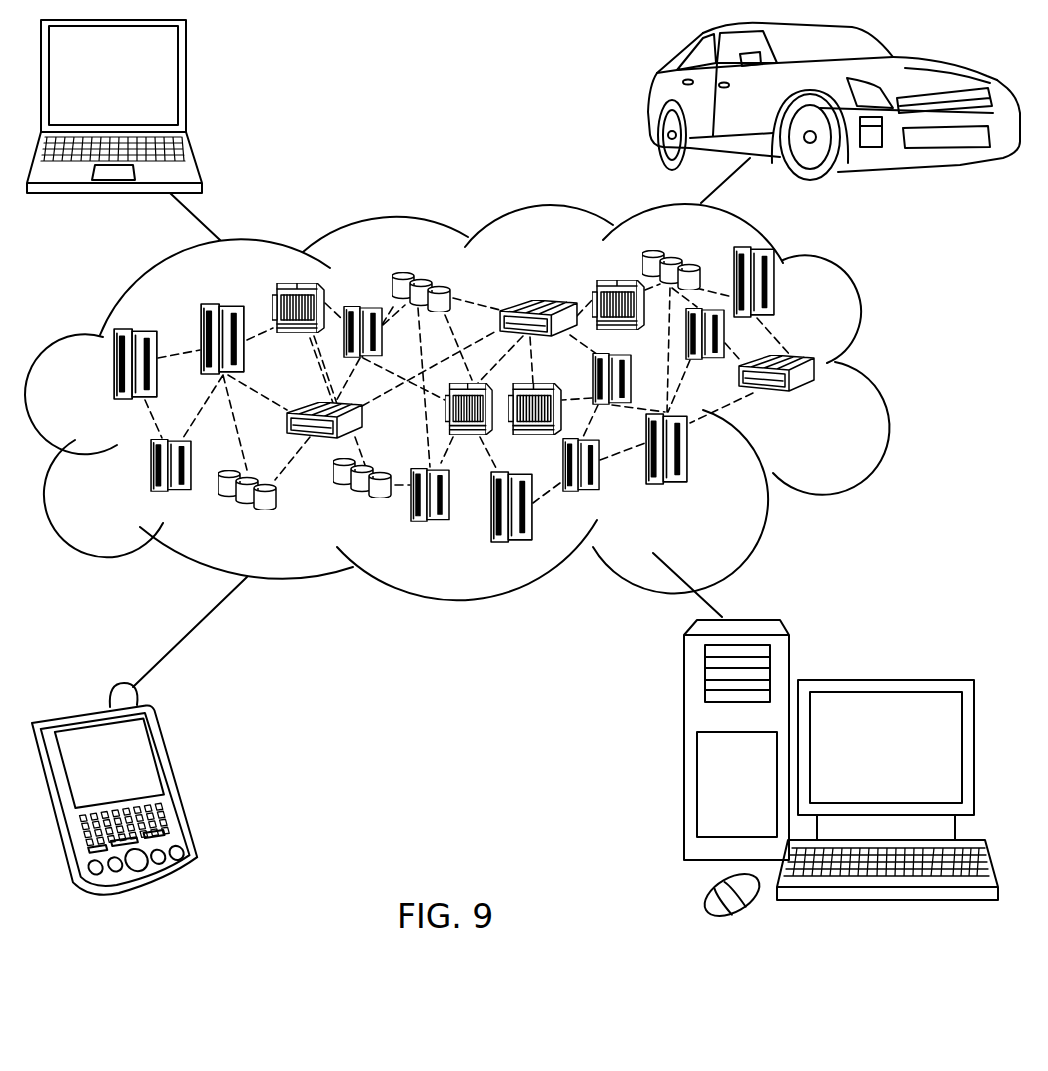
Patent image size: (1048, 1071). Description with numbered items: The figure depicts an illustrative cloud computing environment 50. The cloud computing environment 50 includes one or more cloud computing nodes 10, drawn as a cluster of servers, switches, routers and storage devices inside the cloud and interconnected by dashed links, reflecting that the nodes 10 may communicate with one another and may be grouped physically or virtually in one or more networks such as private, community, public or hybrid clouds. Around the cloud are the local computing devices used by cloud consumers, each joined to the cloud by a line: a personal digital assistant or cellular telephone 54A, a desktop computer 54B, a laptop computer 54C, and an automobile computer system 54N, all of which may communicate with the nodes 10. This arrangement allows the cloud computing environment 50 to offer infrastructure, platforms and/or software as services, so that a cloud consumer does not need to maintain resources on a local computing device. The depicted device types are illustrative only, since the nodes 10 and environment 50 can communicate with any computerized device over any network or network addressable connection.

The cloud computing node 10 is at (821, 407).
The cloud computing environment 50 is at (882, 373).
The personal digital assistant (PDA) or cellular telephone 54A is at (175, 780).
The desktop computer 54B is at (883, 680).
The laptop computer 54C is at (186, 83).
The automobile computer system 54N is at (650, 100).